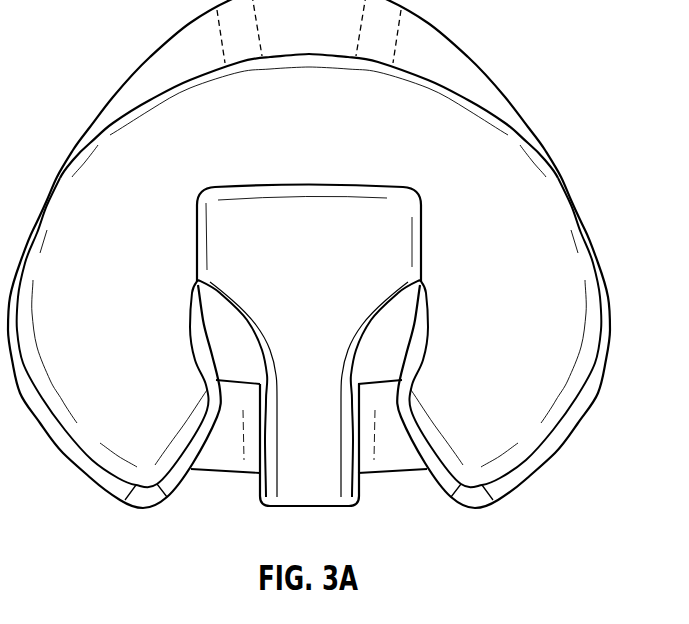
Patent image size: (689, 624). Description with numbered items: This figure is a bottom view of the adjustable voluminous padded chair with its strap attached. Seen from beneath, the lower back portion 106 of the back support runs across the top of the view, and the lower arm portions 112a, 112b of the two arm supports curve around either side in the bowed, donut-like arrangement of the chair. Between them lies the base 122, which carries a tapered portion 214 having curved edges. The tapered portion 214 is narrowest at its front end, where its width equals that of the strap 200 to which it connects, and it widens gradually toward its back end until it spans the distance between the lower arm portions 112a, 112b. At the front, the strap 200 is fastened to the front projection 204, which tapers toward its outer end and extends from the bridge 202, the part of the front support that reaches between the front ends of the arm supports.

The lower back portion 106 is at (330, 36).
The lower arm portion 112a is at (146, 363).
The lower arm portion 112b is at (525, 363).
The base 122 is at (330, 246).
The tapered portion 214 is at (330, 374).
The strap 200 is at (330, 459).
The front projection 204 is at (258, 487).
The bridge 202 is at (389, 473).